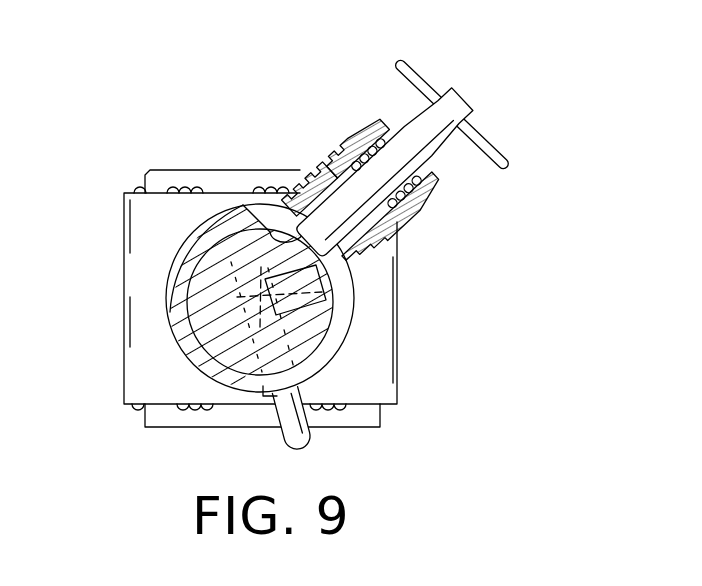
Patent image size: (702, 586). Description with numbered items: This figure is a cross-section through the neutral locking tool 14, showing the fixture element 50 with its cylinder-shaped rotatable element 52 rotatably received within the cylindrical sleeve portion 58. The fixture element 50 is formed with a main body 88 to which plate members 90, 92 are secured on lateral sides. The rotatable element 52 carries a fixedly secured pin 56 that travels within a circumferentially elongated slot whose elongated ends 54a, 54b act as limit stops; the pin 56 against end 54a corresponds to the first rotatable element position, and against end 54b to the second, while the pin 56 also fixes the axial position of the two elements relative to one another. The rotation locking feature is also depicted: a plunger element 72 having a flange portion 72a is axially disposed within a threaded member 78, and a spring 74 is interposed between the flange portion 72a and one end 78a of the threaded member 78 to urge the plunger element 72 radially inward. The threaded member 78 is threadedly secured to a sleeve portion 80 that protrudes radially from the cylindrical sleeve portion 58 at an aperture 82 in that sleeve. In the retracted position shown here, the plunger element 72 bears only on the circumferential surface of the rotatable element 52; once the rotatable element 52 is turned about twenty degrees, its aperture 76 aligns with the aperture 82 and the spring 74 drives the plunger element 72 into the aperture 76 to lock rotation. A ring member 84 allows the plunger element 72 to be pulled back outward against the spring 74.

The neutral locking tool 14 is at (158, 80).
The fixture element 50 is at (108, 228).
The rotatable element 52 is at (190, 323).
The elongated end of slot 54a is at (350, 353).
The elongated end of slot 54b is at (267, 430).
The fixedly secured pin 56 is at (298, 432).
The cylindrical sleeve portion 58 is at (193, 353).
The plunger element 72 is at (427, 127).
The flange portion 72a is at (322, 150).
The spring 74 is at (370, 127).
The aperture 76 is at (317, 293).
The threaded member 78 is at (360, 128).
The end of threaded member 78a is at (430, 170).
The sleeve portion 80 is at (395, 222).
The aperture 82 is at (243, 205).
The ring member 84 is at (490, 153).
The main body 88 is at (138, 270).
The plate member 90 is at (157, 418).
The plate member 92 is at (165, 182).